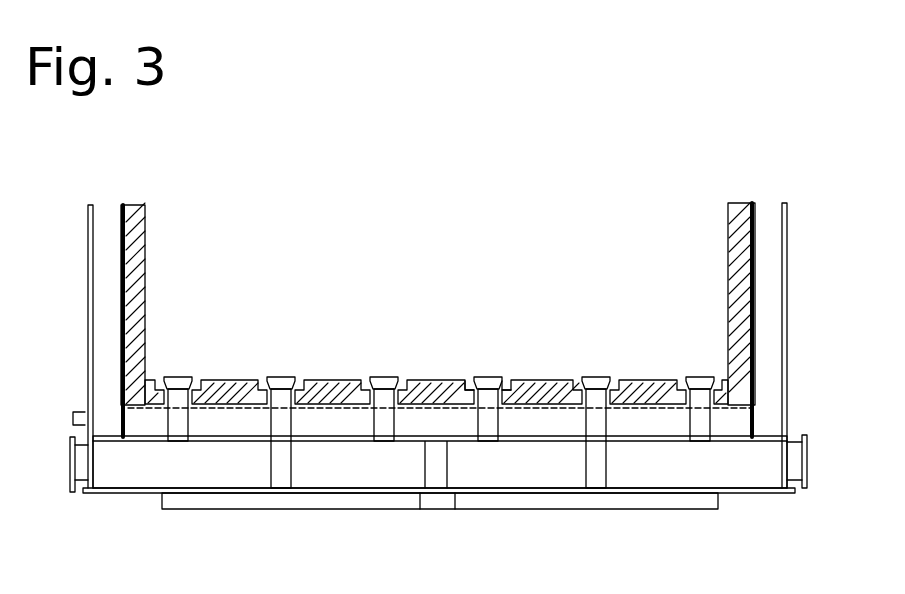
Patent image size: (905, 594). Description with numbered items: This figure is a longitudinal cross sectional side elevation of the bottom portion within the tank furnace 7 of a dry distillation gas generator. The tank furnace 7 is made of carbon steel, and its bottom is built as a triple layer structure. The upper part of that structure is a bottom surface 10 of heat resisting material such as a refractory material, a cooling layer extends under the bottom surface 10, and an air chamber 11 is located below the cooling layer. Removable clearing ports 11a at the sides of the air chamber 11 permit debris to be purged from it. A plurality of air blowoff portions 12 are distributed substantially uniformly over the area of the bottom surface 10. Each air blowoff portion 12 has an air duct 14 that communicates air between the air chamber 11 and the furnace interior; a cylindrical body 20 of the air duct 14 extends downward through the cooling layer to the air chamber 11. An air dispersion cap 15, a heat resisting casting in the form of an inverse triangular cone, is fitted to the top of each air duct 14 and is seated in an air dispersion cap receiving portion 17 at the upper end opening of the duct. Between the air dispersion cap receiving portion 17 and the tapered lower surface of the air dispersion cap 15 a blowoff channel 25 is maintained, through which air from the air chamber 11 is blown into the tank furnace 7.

The tank furnace 7 is at (78, 224).
The bottom surface 10 is at (548, 378).
The air chamber 11 is at (132, 480).
The removable clearing ports 11a is at (70, 470).
The air blowoff portions 12 is at (183, 375).
The air duct 14 is at (368, 421).
The air dispersion cap 15 is at (601, 376).
The air dispersion cap receiving portion 17 is at (392, 376).
The cylindrical body 20 is at (485, 418).
The blowoff channel 25 is at (466, 372).